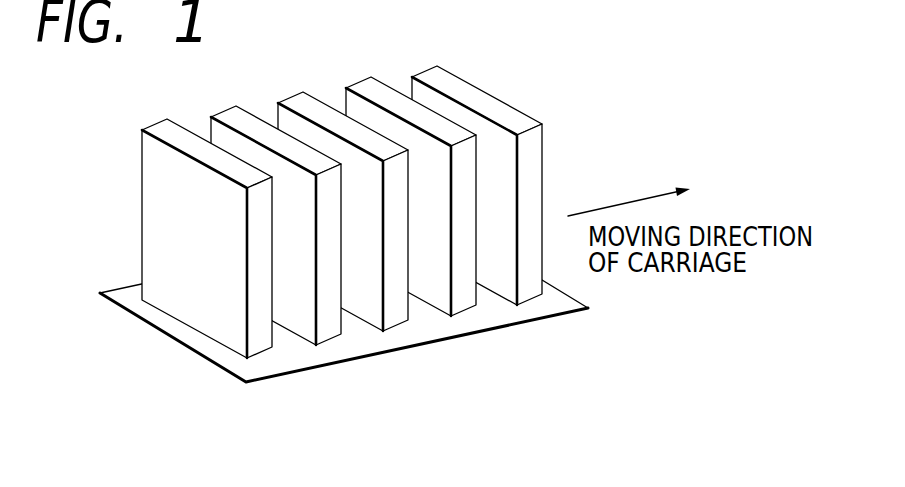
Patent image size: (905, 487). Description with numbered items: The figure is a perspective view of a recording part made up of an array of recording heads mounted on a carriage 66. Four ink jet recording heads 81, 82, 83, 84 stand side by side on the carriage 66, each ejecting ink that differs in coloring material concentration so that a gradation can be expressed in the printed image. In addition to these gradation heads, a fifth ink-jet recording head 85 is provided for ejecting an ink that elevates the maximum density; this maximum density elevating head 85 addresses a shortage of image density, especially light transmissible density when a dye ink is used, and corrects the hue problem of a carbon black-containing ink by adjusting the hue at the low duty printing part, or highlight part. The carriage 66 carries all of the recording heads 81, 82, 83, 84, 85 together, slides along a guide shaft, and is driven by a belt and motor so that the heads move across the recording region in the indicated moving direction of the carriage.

The carriage 66 is at (192, 339).
The ink jet recording head 81 is at (258, 342).
The ink jet recording head 82 is at (328, 332).
The ink jet recording head 83 is at (393, 315).
The ink jet recording head 84 is at (460, 302).
The ink-jet recording head for ejection of maximum density elevating ink 85 is at (527, 289).